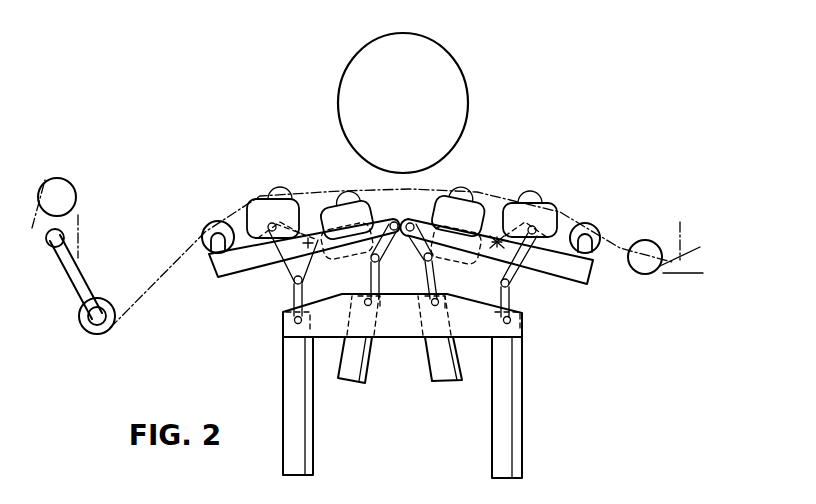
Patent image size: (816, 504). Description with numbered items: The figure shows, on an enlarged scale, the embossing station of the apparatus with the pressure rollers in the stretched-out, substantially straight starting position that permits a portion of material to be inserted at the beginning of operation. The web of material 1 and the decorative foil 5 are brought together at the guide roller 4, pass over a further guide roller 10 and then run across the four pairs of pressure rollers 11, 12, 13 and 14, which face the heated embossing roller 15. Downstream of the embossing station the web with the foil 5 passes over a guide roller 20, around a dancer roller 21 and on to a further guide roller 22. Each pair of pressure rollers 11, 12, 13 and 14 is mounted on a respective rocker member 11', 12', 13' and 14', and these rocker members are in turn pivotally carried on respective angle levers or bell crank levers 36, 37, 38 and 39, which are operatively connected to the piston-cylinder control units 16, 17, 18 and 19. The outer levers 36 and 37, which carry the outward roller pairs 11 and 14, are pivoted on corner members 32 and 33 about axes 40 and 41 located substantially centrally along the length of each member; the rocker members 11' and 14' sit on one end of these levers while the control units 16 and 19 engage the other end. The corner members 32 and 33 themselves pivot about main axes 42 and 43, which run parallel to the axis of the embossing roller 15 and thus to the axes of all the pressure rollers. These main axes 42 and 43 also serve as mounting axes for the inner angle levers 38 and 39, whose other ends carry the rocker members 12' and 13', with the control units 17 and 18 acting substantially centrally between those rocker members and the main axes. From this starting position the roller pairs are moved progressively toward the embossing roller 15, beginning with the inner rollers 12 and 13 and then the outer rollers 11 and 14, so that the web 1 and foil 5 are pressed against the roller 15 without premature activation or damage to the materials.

The web of material 1 is at (686, 276).
The guide roller 4 is at (636, 240).
The foil 5 is at (680, 233).
The guide roller 10 is at (583, 224).
The pair of pressure rollers 11 is at (530, 200).
The rocker member 11' is at (538, 269).
The pair of pressure rollers 12 is at (459, 197).
The rocker member 12' is at (462, 255).
The pair of pressure rollers 13 is at (346, 199).
The rocker member 13' is at (346, 254).
The pair of pressure rollers 14 is at (273, 197).
The rocker member 14' is at (269, 270).
The embossing roller 15 is at (432, 50).
The piston-cylinder unit 16 is at (514, 430).
The piston-cylinder unit 17 is at (452, 373).
The piston-cylinder unit 18 is at (355, 373).
The piston-cylinder unit 19 is at (292, 422).
The guide roller 20 is at (213, 230).
The dancer roller 21 is at (108, 326).
The guide roller 22 is at (60, 183).
The corner member 32 is at (584, 280).
The corner member 33 is at (222, 284).
The angle lever 36 is at (522, 280).
The angle lever 37 is at (292, 282).
The angle lever 38 is at (480, 250).
The angle lever 39 is at (368, 240).
The axis 40 is at (496, 239).
The axis 41 is at (308, 240).
The main axis 42 is at (422, 264).
The main axis 43 is at (385, 264).